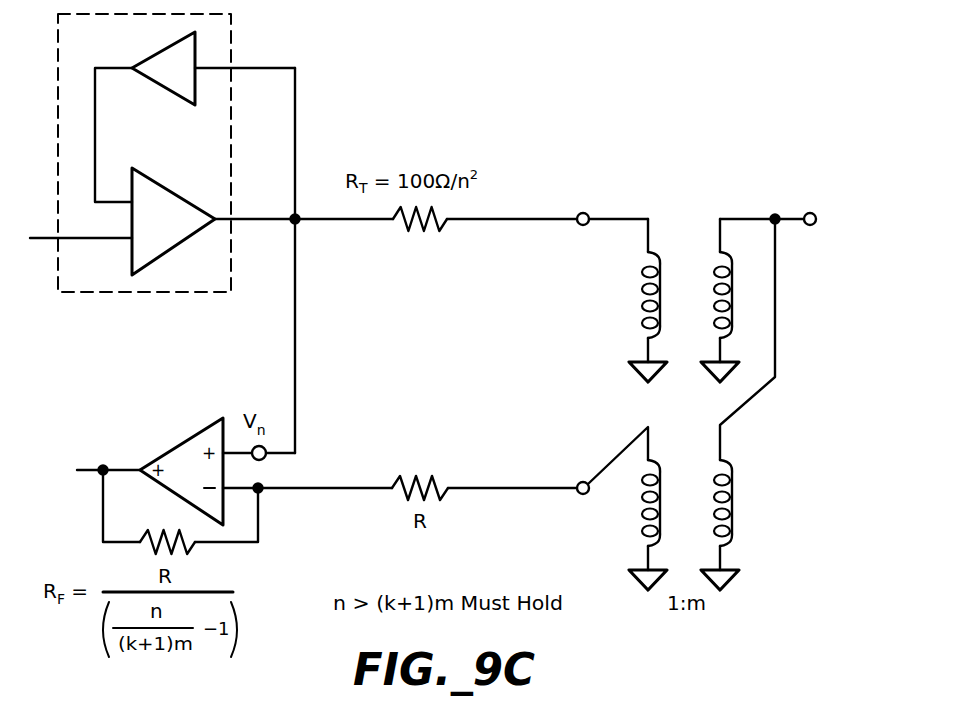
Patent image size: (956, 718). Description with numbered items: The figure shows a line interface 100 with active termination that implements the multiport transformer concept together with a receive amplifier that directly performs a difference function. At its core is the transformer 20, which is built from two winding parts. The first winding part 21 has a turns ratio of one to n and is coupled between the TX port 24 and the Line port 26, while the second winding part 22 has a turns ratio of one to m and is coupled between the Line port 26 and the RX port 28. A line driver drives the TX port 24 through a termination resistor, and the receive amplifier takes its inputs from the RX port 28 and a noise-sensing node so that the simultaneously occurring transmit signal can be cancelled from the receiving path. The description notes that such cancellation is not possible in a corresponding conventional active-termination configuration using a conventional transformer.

The line interface 100 is at (518, 42).
The transformer 20 is at (725, 256).
The first winding part 21 is at (738, 300).
The second winding part 22 is at (738, 506).
The TX port 24 is at (585, 212).
The Line port 26 is at (815, 224).
The RX port 28 is at (582, 496).